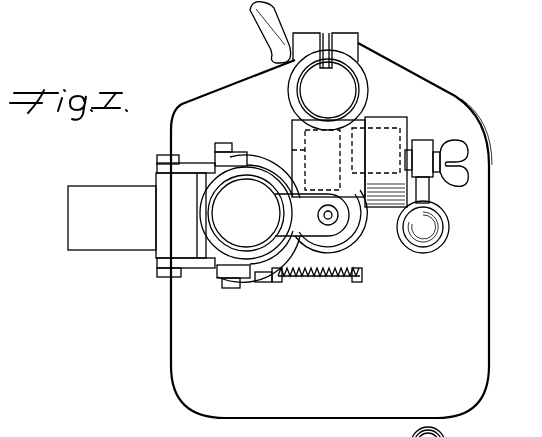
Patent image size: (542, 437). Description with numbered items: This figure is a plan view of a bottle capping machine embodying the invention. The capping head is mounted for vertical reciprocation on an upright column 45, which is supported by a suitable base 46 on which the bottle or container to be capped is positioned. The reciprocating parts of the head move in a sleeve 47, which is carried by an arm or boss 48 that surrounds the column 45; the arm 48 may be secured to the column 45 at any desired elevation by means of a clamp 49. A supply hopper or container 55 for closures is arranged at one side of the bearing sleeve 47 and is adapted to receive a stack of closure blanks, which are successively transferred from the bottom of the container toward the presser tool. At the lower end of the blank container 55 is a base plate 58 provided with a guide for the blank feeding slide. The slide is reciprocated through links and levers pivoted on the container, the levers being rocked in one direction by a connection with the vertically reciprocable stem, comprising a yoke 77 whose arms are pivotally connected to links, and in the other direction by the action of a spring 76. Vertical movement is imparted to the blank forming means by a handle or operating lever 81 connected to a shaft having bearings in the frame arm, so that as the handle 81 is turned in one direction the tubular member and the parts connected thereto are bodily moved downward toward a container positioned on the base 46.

The column 45 is at (343, 85).
The base 46 is at (472, 320).
The sleeve 47 is at (362, 247).
The arm or boss 48 is at (297, 133).
The clamp 49 is at (308, 48).
The supply hopper or container 55 is at (224, 236).
The base plate 58 is at (108, 200).
The spring 76 is at (345, 279).
The yoke 77 is at (288, 278).
The handle or operating lever 81 is at (433, 243).